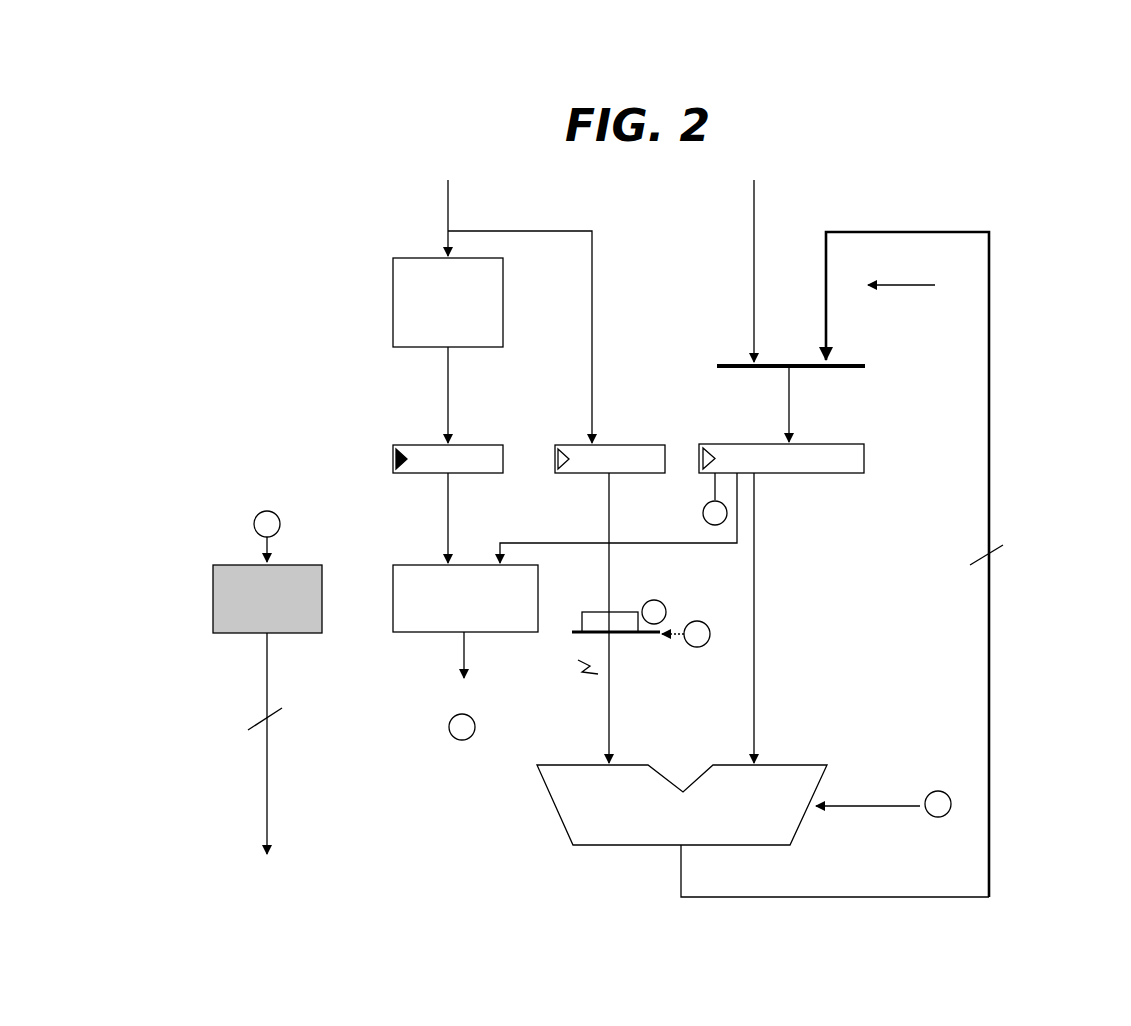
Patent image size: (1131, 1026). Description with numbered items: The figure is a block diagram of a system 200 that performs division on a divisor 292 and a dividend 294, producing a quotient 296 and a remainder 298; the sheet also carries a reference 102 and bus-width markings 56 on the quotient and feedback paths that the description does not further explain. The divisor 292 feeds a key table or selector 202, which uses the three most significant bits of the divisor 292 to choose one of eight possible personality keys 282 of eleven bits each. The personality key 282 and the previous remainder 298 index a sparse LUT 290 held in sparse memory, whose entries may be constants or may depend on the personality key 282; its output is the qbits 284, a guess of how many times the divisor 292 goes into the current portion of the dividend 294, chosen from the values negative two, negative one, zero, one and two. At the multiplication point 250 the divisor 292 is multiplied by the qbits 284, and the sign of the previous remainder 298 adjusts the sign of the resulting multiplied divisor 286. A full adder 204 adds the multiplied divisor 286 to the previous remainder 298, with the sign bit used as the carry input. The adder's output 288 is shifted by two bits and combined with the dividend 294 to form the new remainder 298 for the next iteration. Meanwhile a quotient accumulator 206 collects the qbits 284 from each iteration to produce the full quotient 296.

The divider 102 is at (1101, 40).
The system 200 is at (802, 528).
The divisor 292 is at (498, 301).
The dividend 294 is at (770, 261).
The key table or selector 202 is at (448, 350).
The personality key 282 is at (448, 492).
The remainder 298 is at (682, 592).
The sparse LUT 290 is at (464, 586).
The multiplication point 250 is at (607, 623).
The multiplied divisor 286 is at (610, 604).
The adder 204 is at (744, 805).
The adder's output 288 is at (835, 871).
The qbits 284 is at (453, 686).
The quotient accumulator 206 is at (267, 572).
The quotient 296 is at (286, 760).
The 56-bit bus width 56 is at (645, 624).